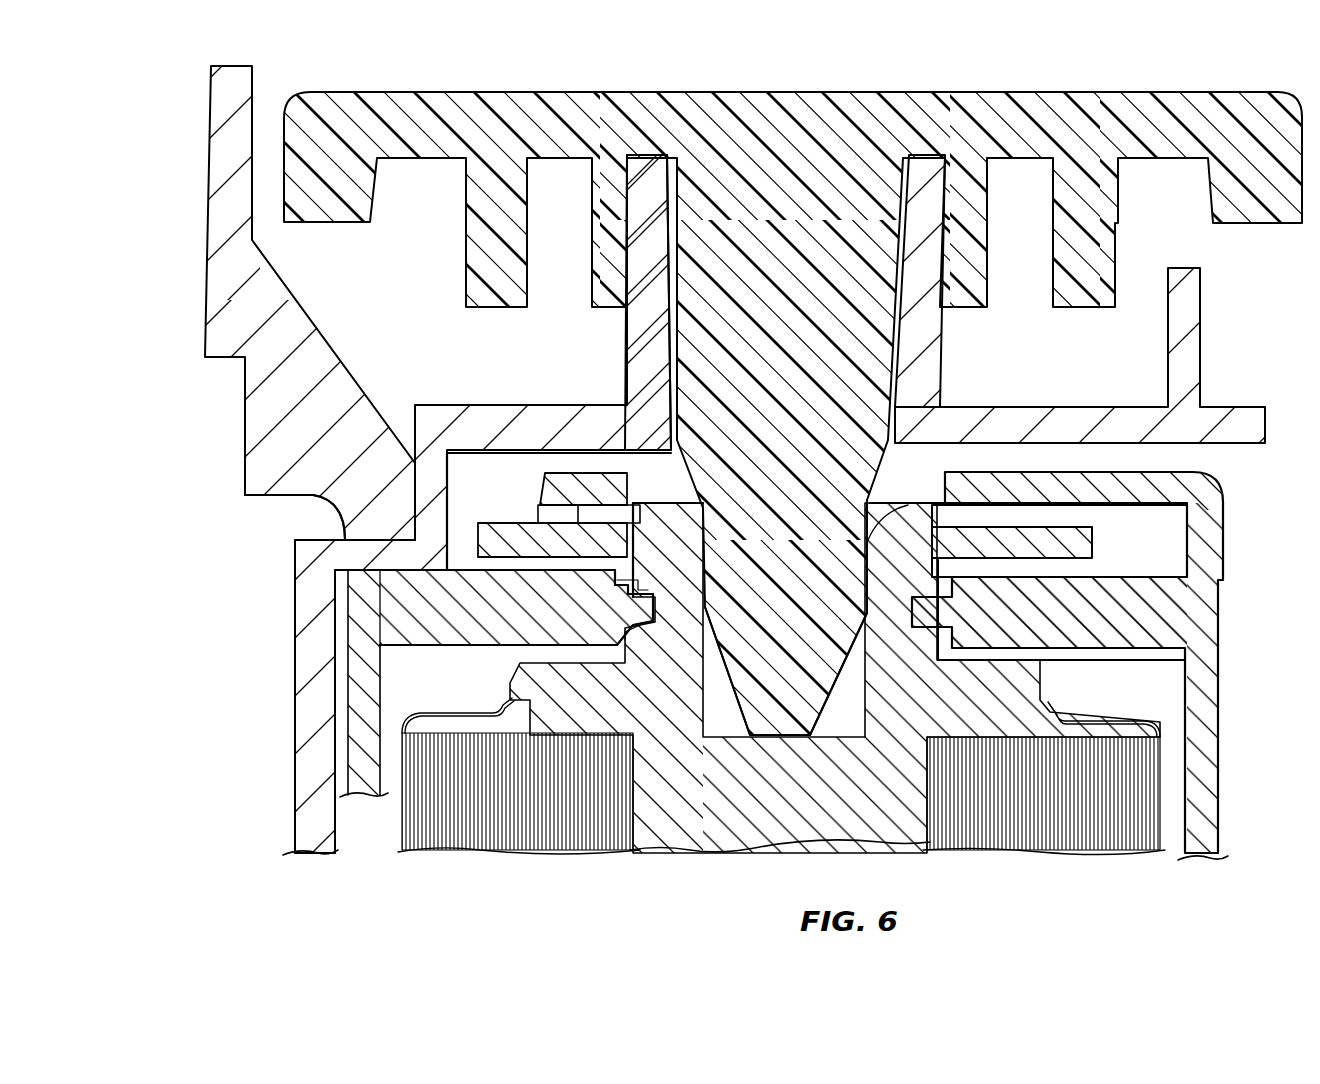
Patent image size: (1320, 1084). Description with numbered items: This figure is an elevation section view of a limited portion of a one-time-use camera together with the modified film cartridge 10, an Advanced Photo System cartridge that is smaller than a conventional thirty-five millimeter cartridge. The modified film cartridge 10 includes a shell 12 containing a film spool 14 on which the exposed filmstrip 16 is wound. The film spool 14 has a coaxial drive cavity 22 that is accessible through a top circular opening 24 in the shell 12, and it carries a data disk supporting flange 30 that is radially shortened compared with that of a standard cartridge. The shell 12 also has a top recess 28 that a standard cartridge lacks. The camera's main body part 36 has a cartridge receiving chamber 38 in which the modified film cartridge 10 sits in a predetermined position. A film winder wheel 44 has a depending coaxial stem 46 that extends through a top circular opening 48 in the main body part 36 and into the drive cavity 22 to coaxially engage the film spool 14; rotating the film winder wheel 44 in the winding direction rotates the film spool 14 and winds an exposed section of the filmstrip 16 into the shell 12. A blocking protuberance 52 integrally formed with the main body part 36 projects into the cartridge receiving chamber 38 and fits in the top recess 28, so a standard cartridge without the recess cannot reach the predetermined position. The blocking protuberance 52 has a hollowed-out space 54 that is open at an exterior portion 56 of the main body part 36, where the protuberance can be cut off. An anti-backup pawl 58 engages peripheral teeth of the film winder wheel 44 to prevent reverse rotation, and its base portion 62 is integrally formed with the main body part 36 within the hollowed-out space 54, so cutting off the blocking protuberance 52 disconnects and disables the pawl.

The modified film cartridge 10 is at (348, 692).
The shell 12 is at (357, 737).
The film spool 14 is at (718, 845).
The exposed filmstrip 16 is at (540, 836).
The drive cavity 22 is at (845, 699).
The top circular opening 24 is at (923, 485).
The top recess 28 is at (461, 538).
The data disk supporting flange 30 is at (514, 523).
The main body part 36 is at (305, 604).
The cartridge receiving chamber 38 is at (330, 768).
The film winder wheel 44 is at (410, 103).
The depending coaxial stem 46 is at (665, 342).
The top circular opening 48 is at (900, 360).
The blocking protuberance 52 is at (400, 647).
The hollowed-out space 54 is at (316, 517).
The exterior portion 56 is at (413, 398).
The anti-backup pawl 58 is at (222, 250).
The base portion 62 is at (300, 462).